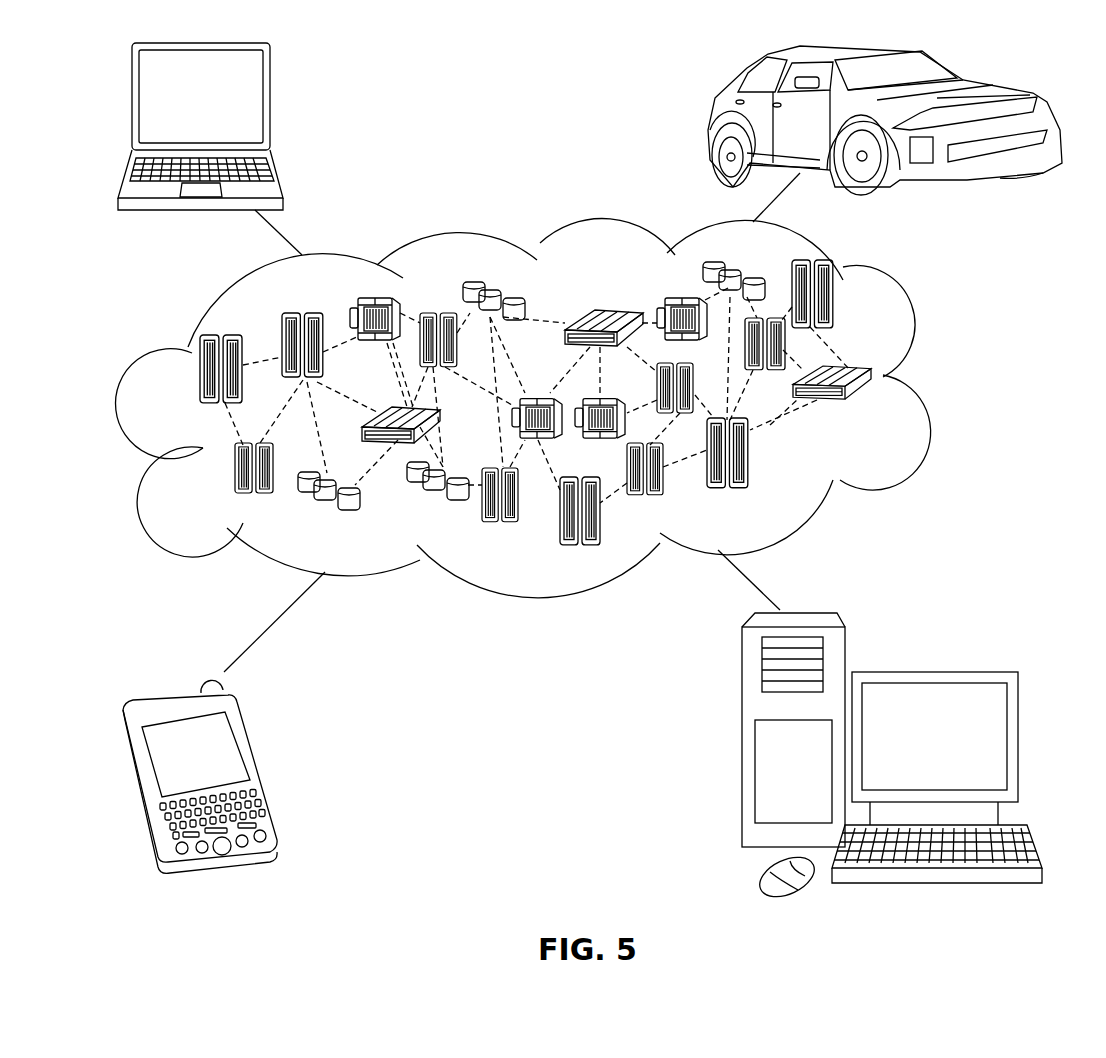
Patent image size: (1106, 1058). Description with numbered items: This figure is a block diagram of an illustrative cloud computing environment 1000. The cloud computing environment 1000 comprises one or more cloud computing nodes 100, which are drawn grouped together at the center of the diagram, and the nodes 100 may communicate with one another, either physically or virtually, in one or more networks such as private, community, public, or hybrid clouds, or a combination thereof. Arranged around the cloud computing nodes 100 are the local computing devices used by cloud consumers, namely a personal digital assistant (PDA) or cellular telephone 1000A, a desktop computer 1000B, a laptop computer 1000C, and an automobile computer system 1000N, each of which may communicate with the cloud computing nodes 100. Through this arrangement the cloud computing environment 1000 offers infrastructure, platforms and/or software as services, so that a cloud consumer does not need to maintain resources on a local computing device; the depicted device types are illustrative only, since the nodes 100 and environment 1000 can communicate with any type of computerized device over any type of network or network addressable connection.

The cloud computing nodes 100 is at (876, 411).
The cloud computing environment 1000 is at (933, 381).
The personal digital assistant (PDA) or cellular telephone 1000A is at (258, 768).
The desktop computer 1000B is at (933, 672).
The laptop computer 1000C is at (272, 105).
The automobile computer system 1000N is at (712, 120).